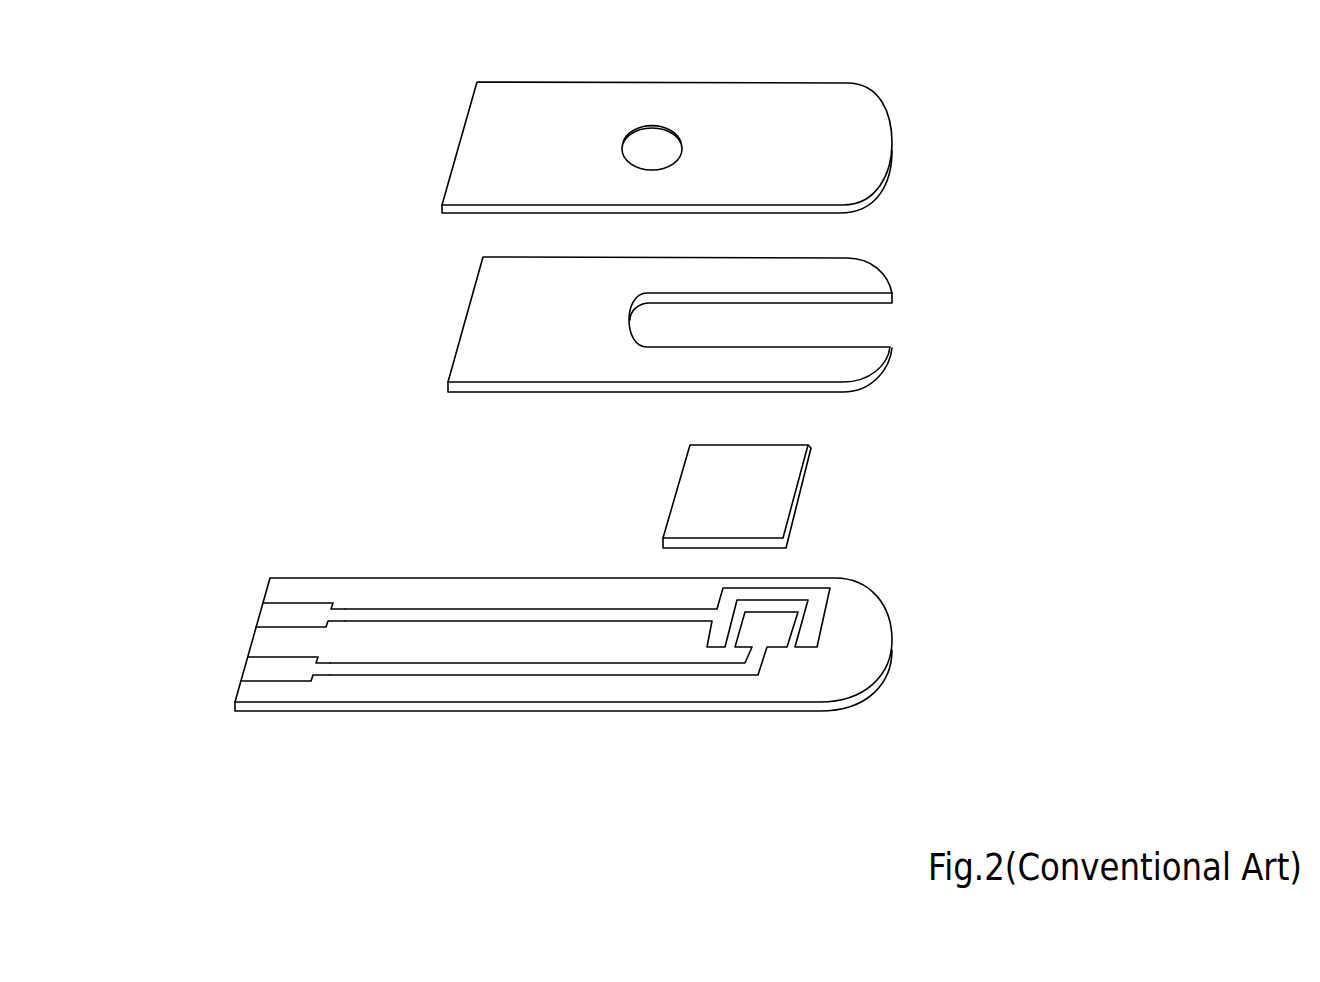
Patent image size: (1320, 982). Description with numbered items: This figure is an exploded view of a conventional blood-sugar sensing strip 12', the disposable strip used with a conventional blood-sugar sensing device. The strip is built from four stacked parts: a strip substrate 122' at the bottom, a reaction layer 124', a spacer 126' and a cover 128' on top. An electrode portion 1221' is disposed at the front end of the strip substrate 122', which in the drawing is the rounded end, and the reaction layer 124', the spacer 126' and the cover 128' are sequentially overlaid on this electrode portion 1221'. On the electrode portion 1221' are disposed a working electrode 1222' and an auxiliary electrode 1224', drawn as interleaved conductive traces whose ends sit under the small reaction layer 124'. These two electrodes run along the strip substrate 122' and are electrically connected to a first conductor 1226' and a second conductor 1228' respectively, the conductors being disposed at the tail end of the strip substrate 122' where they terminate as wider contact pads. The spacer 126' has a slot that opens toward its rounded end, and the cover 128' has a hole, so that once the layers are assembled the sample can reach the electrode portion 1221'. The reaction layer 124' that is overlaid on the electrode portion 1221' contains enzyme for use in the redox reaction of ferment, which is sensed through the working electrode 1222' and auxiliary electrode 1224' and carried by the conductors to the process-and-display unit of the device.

The blood-sugar sensing strip 12' is at (533, 402).
The cover 128' is at (622, 159).
The spacer 126' is at (710, 314).
The reaction layer 124' is at (781, 496).
The strip substrate 122' is at (613, 614).
The electrode portion 1221' is at (613, 644).
The working electrode 1222' is at (601, 700).
The auxiliary electrode 1224' is at (634, 585).
The first conductor 1226' is at (281, 715).
The second conductor 1228' is at (278, 582).